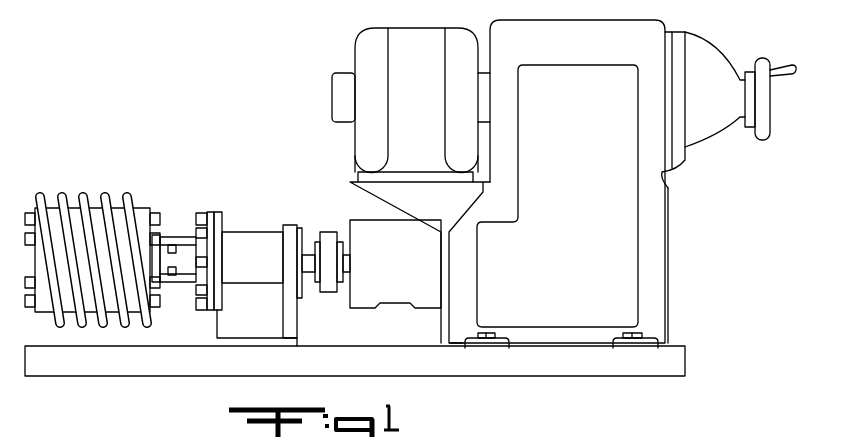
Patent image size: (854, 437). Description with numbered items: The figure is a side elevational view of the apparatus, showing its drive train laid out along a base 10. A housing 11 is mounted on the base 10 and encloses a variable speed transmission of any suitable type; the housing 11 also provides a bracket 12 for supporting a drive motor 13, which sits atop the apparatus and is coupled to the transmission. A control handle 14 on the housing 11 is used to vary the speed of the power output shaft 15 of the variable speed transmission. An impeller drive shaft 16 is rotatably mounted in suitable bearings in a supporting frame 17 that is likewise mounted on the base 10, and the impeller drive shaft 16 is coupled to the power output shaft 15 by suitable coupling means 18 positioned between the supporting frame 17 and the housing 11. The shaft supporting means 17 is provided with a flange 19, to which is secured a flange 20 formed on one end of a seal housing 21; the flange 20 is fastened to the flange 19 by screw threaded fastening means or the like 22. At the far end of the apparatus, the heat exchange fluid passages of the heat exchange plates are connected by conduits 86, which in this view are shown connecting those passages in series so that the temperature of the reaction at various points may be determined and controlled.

The base 10 is at (512, 377).
The housing 11 is at (668, 262).
The bracket 12 is at (350, 185).
The drive motor 13 is at (418, 28).
The control handle 14 is at (752, 58).
The power output shaft 15 is at (343, 277).
The impeller drive shaft 16 is at (308, 251).
The supporting frame 17 is at (297, 317).
The coupling means 18 is at (326, 233).
The flange 19 is at (223, 212).
The flange 20 is at (213, 210).
The seal housing 21 is at (184, 233).
The screw threaded fastening means 22 is at (198, 310).
The conduits 86 is at (47, 195).